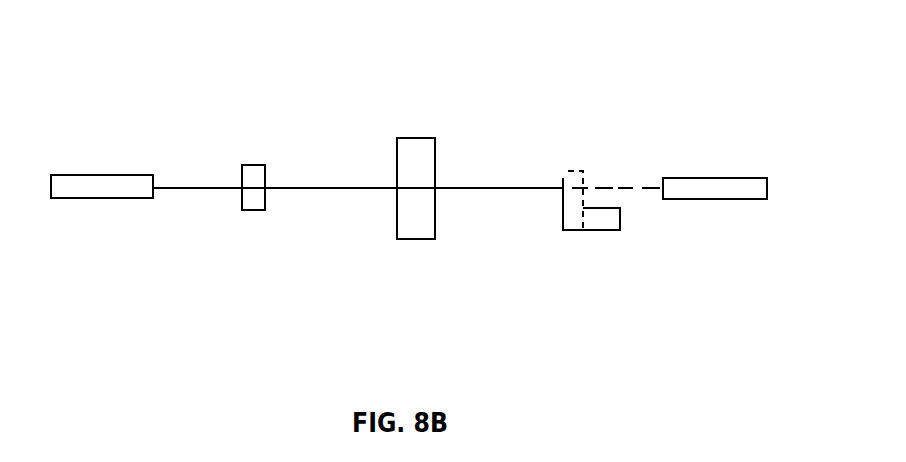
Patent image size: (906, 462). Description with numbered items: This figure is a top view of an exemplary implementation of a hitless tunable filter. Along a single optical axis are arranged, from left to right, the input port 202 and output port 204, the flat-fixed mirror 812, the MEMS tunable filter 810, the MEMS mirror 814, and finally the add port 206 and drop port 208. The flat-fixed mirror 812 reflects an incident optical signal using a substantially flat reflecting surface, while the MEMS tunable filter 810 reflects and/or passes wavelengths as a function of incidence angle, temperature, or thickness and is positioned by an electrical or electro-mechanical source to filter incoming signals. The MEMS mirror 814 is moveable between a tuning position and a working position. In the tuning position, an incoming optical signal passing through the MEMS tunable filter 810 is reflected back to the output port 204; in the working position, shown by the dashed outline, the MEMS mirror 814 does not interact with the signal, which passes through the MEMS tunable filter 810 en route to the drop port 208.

The input port 202 is at (121, 239).
The output port 204 is at (60, 198).
The add port 206 is at (709, 144).
The drop port 208 is at (685, 178).
The MEMS tunable filter 810 is at (408, 138).
The flat-fixed mirror 812 is at (250, 210).
The MEMS mirror 814 is at (570, 231).